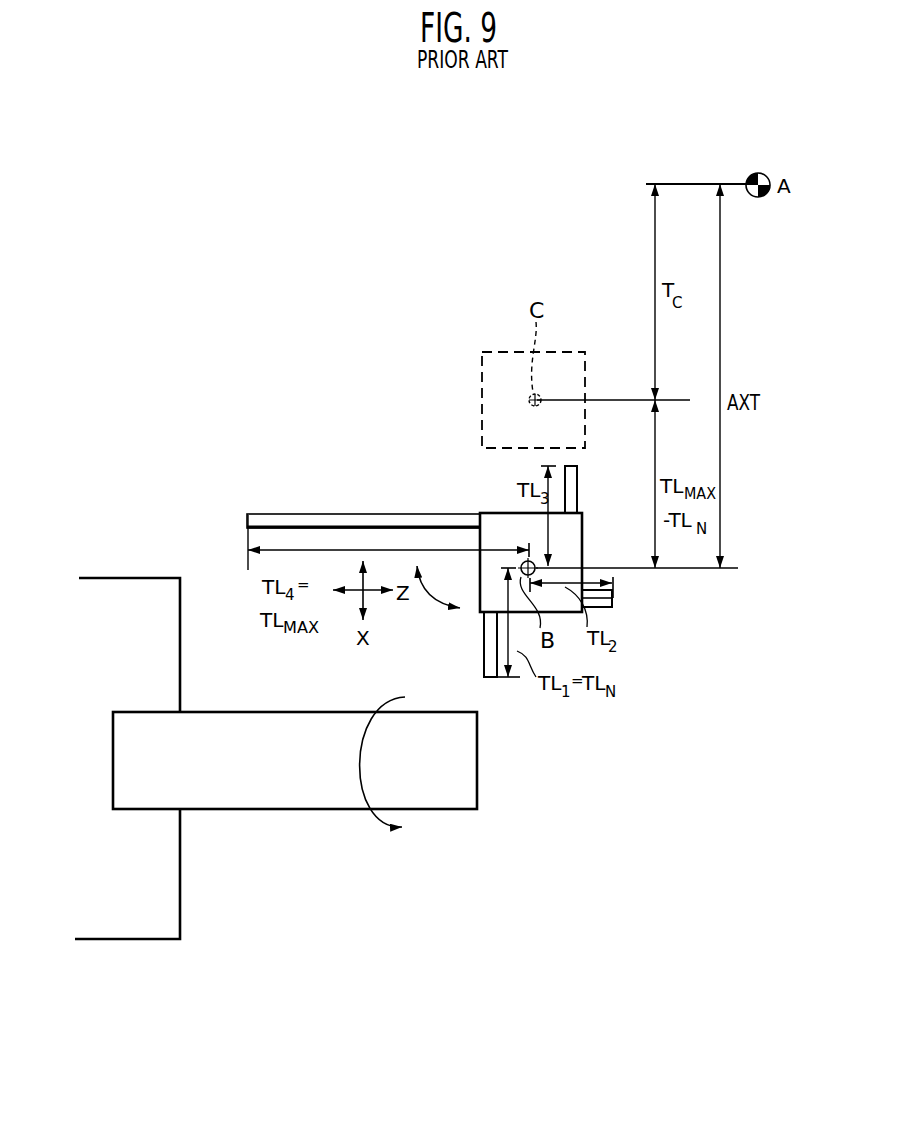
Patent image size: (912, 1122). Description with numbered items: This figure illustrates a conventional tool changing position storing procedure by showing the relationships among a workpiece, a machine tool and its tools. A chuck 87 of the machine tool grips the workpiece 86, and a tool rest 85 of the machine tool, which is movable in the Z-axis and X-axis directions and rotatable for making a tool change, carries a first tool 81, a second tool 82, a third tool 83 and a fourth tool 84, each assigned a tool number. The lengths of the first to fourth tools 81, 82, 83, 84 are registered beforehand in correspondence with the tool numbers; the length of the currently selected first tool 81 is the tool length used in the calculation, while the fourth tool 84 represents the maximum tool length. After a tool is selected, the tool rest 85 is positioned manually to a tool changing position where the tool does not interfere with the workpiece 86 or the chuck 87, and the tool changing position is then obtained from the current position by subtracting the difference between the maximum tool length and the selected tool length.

The first tool 81 is at (484, 654).
The second tool 82 is at (613, 606).
The third tool 83 is at (579, 497).
The fourth tool 84 is at (377, 514).
The tool rest 85 is at (496, 513).
The workpiece 86 is at (467, 785).
The chuck 87 is at (131, 586).